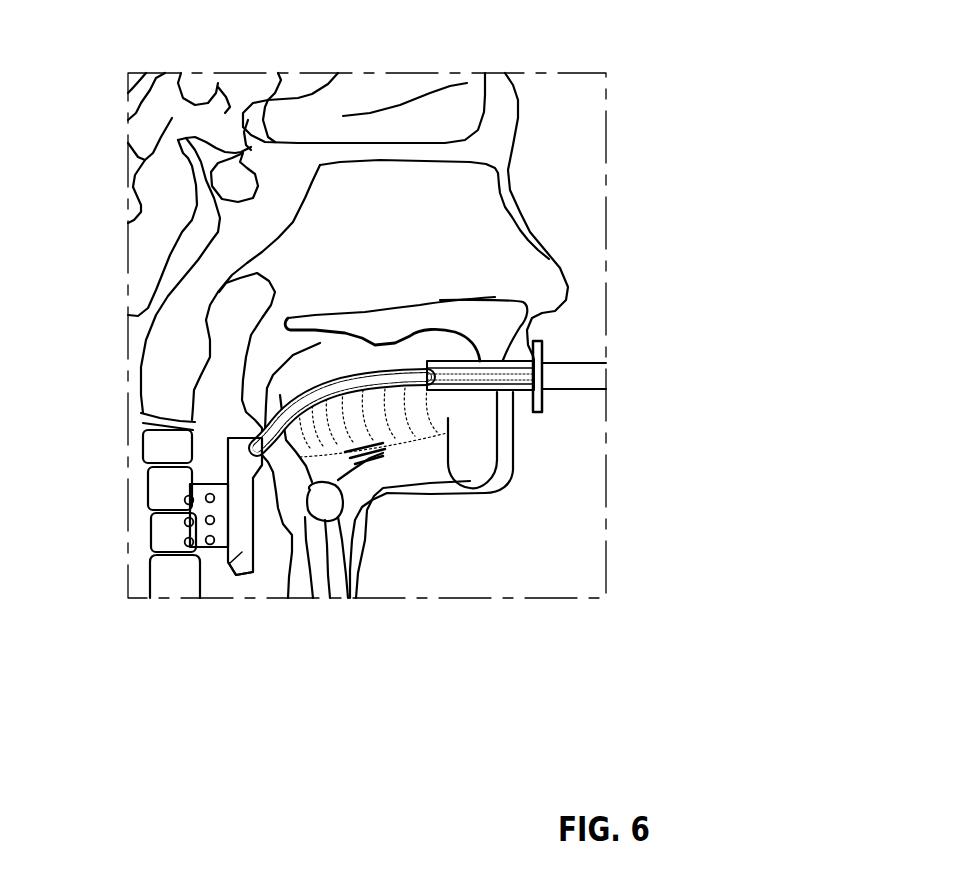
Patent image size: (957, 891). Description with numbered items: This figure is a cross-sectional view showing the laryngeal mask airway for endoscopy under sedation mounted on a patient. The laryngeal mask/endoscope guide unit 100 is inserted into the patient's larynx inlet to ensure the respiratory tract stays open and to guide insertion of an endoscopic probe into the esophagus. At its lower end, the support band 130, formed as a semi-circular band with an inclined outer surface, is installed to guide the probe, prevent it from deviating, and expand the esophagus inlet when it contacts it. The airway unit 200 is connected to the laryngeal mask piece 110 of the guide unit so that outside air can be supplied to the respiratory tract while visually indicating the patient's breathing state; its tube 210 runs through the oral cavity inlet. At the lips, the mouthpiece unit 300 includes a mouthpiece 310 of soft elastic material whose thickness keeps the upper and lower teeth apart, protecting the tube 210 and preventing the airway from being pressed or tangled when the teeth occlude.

The laryngeal mask/endoscope guide unit 100 is at (258, 555).
The laryngeal mask piece 110 is at (242, 552).
The support band 130 is at (190, 498).
The airway unit 200 is at (313, 362).
The tube 210 is at (380, 367).
The mouthpiece unit 300 is at (548, 418).
The mouthpiece 310 is at (540, 345).